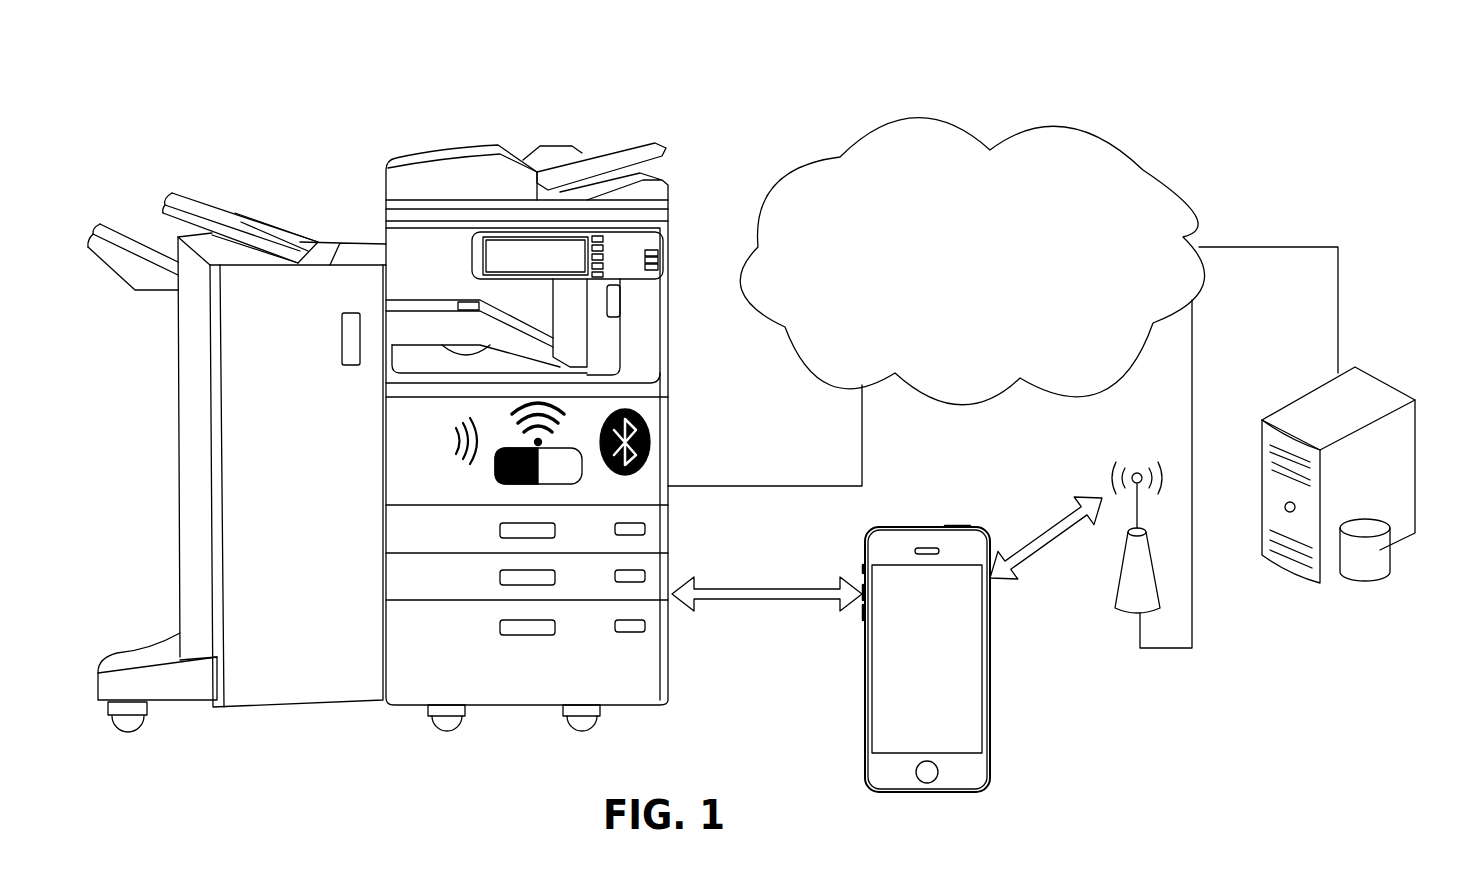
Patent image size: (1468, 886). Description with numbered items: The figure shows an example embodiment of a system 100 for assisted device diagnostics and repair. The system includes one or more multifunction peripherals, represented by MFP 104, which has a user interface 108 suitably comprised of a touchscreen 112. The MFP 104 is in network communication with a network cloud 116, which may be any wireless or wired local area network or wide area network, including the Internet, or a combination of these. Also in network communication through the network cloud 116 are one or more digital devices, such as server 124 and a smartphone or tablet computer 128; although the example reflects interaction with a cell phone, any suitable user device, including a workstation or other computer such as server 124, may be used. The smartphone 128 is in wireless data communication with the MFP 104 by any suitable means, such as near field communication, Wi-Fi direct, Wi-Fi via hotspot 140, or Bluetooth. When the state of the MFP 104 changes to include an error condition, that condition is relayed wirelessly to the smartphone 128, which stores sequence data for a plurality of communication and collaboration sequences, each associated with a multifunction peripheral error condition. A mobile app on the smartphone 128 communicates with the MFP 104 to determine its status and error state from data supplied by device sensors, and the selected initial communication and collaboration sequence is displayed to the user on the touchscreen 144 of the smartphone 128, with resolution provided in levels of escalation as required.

The system 100 is at (1330, 118).
The MFP 104 is at (445, 143).
The user interface 108 is at (656, 247).
The touchscreen 112 is at (553, 267).
The network cloud 116 is at (1178, 178).
The server 124 is at (1415, 446).
The smartphone or tablet computer 128 is at (895, 528).
The hotspot 140 is at (1120, 612).
The touchscreen 144 is at (890, 688).